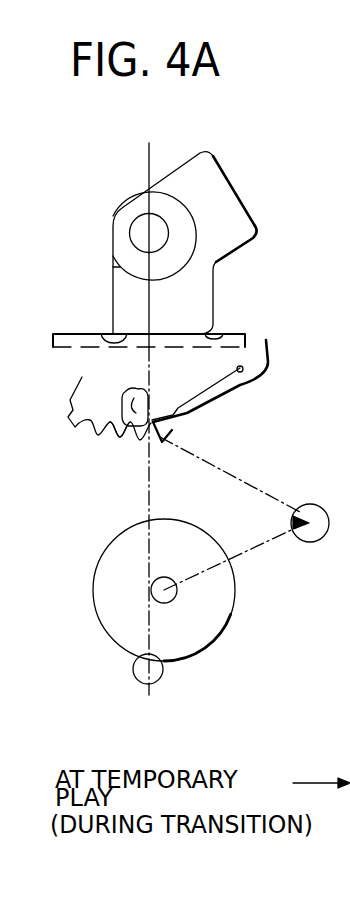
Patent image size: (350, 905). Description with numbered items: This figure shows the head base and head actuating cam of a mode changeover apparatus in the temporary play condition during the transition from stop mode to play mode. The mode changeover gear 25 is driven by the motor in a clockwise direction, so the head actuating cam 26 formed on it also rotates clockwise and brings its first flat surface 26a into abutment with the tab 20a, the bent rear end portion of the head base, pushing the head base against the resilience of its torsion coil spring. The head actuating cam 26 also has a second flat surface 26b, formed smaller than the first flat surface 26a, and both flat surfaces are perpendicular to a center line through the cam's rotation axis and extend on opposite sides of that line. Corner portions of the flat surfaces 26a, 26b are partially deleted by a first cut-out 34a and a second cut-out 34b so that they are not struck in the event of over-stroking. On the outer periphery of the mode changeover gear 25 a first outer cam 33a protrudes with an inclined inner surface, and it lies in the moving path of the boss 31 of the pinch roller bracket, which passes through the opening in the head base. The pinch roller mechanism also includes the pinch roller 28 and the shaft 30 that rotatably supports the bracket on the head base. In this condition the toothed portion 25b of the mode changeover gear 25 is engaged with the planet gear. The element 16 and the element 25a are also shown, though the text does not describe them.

The pin 16 is at (160, 680).
The tab 20a is at (246, 340).
The mode changeover gear 25 is at (86, 436).
The lever arm 25a is at (190, 408).
The toothed portion 25b is at (118, 439).
The head actuating cam 26 is at (126, 206).
The first flat surface 26a is at (106, 334).
The second flat surface 26b is at (229, 183).
The pinch roller 28 is at (218, 625).
The shaft 30 is at (310, 542).
The boss 31 is at (128, 390).
The first outer cam 33a is at (245, 386).
The first cut-out 34a is at (224, 334).
The second cut-out 34b is at (254, 229).